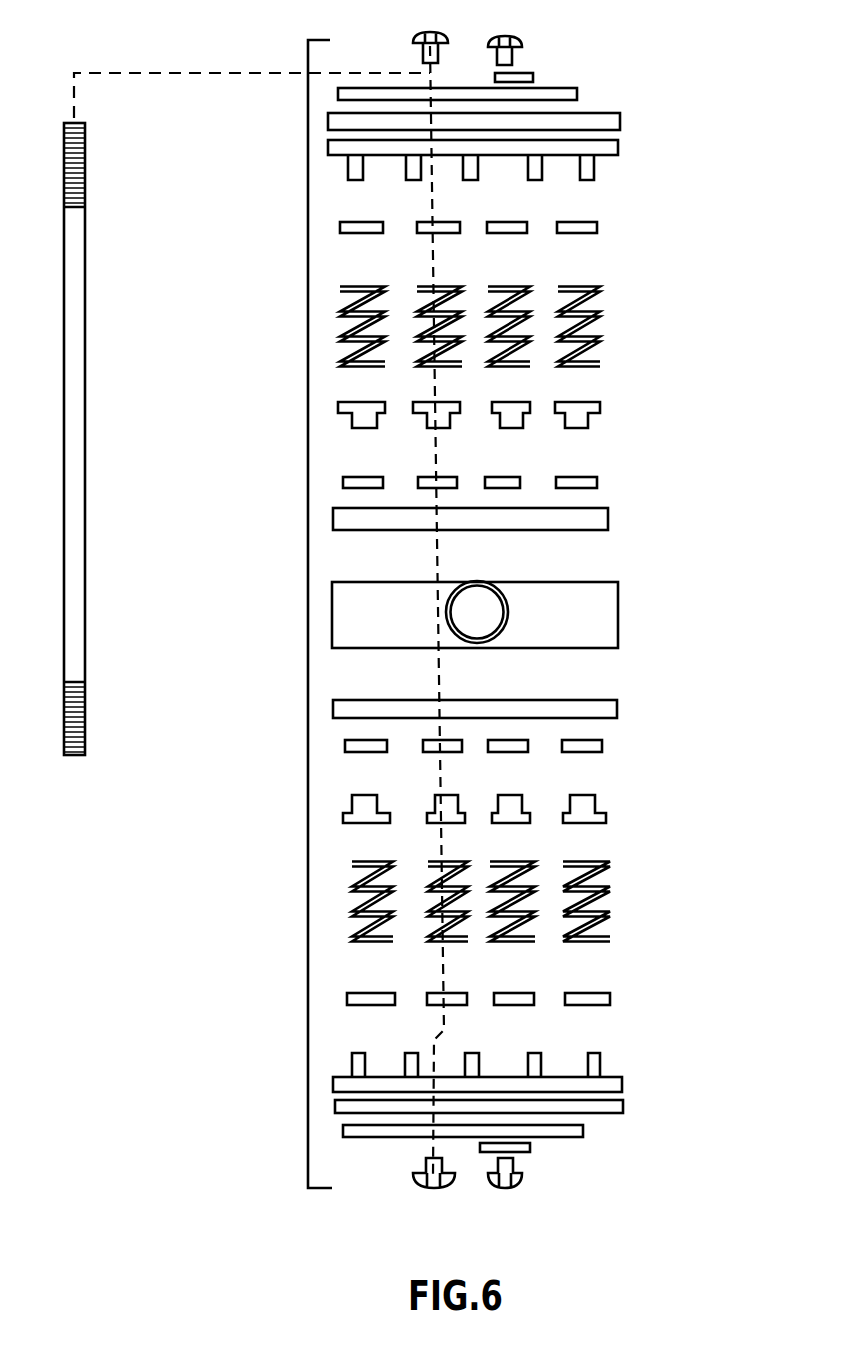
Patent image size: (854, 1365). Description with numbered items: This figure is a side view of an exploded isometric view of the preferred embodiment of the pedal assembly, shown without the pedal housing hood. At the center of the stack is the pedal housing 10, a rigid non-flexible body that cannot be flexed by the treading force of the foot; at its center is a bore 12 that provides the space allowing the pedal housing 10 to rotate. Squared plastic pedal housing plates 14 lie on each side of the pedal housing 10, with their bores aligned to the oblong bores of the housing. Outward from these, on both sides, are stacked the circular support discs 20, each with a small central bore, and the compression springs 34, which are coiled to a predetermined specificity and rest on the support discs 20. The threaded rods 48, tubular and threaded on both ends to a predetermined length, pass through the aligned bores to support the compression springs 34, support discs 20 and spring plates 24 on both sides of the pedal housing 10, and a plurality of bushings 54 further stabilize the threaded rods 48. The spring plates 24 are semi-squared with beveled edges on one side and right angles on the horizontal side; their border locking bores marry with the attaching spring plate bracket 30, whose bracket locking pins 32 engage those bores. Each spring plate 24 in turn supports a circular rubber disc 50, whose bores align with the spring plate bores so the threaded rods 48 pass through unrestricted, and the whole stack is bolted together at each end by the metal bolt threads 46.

The pedal housing 10 is at (597, 583).
The bore 12 is at (475, 608).
The pedal housing plates 14 is at (598, 513).
The support disc 20 is at (540, 68).
The spring plates 24 is at (630, 122).
The spring plate bracket 30 is at (628, 150).
The bracket locking pins 32 is at (602, 175).
The compression springs 34 is at (583, 287).
The bolt thread 46 is at (512, 33).
The threaded rods 48 is at (92, 430).
The rubber disc 50 is at (563, 93).
The bushings 54 is at (587, 407).